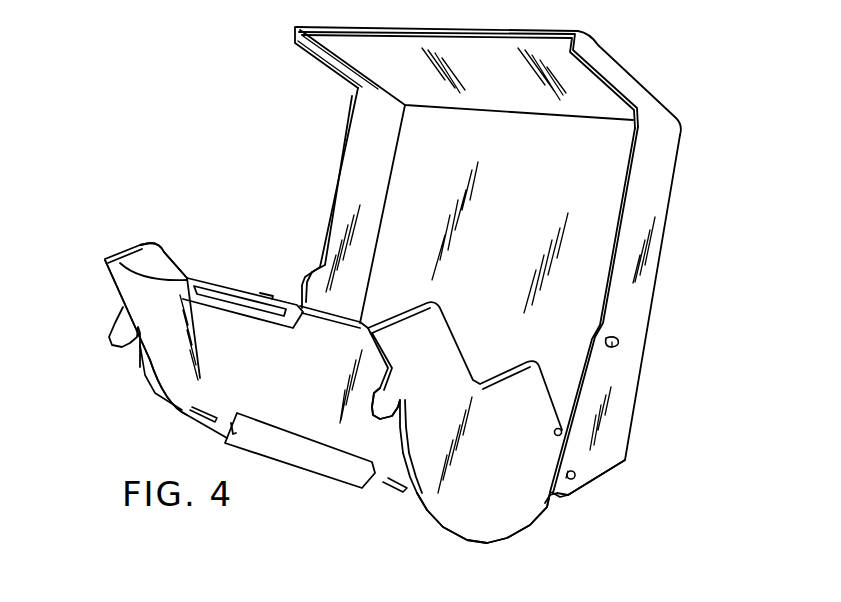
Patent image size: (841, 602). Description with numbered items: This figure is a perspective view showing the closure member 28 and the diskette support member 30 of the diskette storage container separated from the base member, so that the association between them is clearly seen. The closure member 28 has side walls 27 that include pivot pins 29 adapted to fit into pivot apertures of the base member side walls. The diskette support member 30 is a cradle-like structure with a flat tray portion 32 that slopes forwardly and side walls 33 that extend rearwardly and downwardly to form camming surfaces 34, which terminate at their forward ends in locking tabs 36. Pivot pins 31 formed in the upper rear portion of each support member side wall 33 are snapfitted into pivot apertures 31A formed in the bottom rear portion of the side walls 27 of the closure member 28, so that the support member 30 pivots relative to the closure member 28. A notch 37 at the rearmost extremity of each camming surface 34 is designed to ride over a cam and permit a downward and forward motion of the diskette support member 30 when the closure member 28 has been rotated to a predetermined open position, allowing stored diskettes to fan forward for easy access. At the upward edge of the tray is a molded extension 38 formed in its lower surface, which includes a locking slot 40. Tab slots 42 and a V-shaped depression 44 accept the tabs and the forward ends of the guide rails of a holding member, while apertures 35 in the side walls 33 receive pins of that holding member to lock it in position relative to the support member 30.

The side walls of closure member 27 is at (337, 178).
The closure member 28 is at (690, 135).
The pivot pins 29 is at (618, 342).
The diskette support member 30 is at (158, 237).
The pivot pins 31 is at (575, 478).
The pivot apertures 31A is at (568, 475).
The flat tray portion 32 is at (118, 278).
The side walls 33 is at (148, 380).
The camming surfaces 34 is at (148, 398).
The apertures 35 is at (560, 435).
The locking tabs 36 is at (117, 343).
The notch 37 is at (550, 500).
The molded extension 38 is at (120, 255).
The locking slot 40 is at (203, 290).
The tab slots 42 is at (187, 422).
The V-shaped depression 44 is at (325, 466).